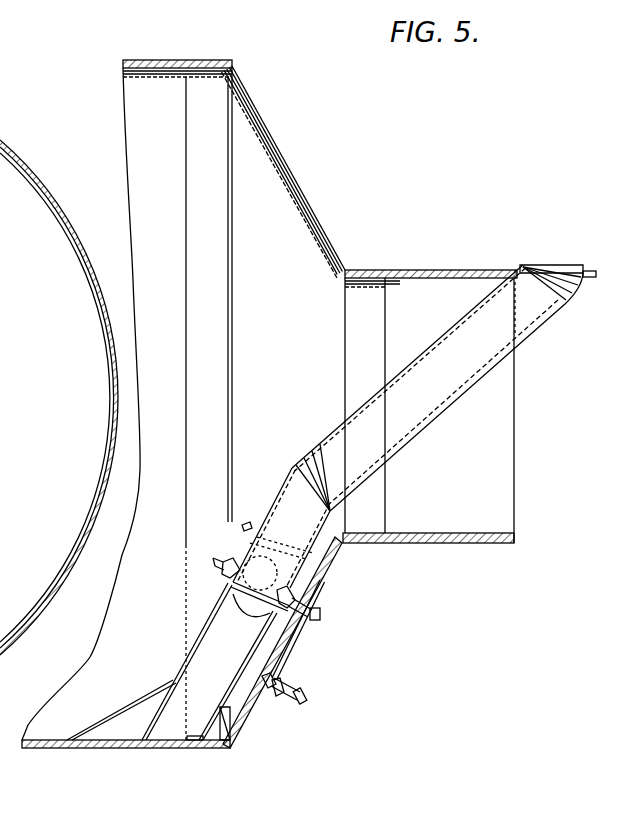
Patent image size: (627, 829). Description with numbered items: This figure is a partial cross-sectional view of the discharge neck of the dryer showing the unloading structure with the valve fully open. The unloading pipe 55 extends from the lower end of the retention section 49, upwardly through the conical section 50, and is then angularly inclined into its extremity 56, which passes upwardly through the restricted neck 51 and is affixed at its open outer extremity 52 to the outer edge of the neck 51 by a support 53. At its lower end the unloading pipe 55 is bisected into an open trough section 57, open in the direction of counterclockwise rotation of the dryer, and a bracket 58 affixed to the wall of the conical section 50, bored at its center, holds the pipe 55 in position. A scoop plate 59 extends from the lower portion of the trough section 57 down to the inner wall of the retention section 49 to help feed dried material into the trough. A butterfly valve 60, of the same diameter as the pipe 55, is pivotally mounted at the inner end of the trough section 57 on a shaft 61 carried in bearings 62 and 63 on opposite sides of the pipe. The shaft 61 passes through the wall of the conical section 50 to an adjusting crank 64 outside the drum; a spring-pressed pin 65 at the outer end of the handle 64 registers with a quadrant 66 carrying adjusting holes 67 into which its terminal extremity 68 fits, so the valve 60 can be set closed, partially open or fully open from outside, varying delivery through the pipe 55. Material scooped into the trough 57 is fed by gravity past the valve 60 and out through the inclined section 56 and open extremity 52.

The retention section 49 is at (54, 748).
The conical section 50 is at (286, 160).
The restricted neck 51 is at (463, 544).
The open outer extremity 52 is at (545, 266).
The support 53 is at (591, 278).
The unloading pipe 55 is at (268, 505).
The angularly inclined extremity 56 is at (425, 358).
The trough section 57 is at (223, 673).
The bracket 58 is at (243, 527).
The scoop plate 59 is at (118, 708).
The butterfly valve 60 is at (248, 608).
The shaft 61 is at (272, 582).
The bearing 62 is at (295, 594).
The bearing 63 is at (225, 573).
The adjusting crank 64 is at (293, 655).
The spring-pressed pin 65 is at (265, 690).
The quadrant 66 is at (288, 673).
The adjusting holes 67 is at (274, 694).
The terminal extremity 68 is at (302, 690).